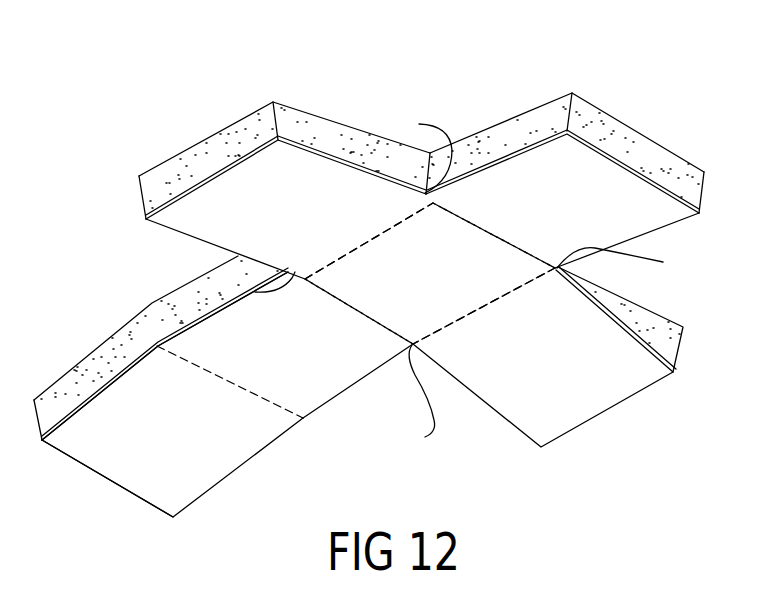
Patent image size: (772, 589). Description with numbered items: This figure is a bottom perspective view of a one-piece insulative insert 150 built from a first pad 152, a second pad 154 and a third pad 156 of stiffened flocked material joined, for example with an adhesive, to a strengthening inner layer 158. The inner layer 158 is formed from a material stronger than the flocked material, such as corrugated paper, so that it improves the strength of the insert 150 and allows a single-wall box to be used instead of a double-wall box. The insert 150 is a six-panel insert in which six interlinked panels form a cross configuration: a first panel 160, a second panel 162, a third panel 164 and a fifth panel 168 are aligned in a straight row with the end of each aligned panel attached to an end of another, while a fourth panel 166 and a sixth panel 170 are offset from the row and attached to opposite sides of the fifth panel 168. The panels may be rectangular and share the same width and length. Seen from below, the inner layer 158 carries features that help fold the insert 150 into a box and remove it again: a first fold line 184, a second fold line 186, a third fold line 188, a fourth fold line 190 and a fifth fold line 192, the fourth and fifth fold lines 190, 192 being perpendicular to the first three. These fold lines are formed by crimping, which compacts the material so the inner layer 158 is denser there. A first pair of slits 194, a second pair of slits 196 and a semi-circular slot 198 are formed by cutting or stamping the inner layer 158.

The insulative insert 150 is at (370, 269).
The first pad 152 is at (633, 146).
The second pad 154 is at (122, 338).
The third pad 156 is at (192, 166).
The strengthening inner layer 158 is at (95, 392).
The first panel 160 is at (585, 216).
The second panel 162 is at (307, 355).
The third panel 164 is at (188, 445).
The fourth panel 166 is at (312, 216).
The fifth panel 168 is at (446, 283).
The sixth panel 170 is at (566, 366).
The first fold line 184 is at (485, 231).
The second fold line 186 is at (392, 327).
The third fold line 188 is at (277, 409).
The fourth fold line 190 is at (307, 278).
The fifth fold line 192 is at (509, 284).
The first pair of slits 194 is at (177, 272).
The second pair of slits 196 is at (543, 349).
The semi-circular slot 198 is at (116, 482).